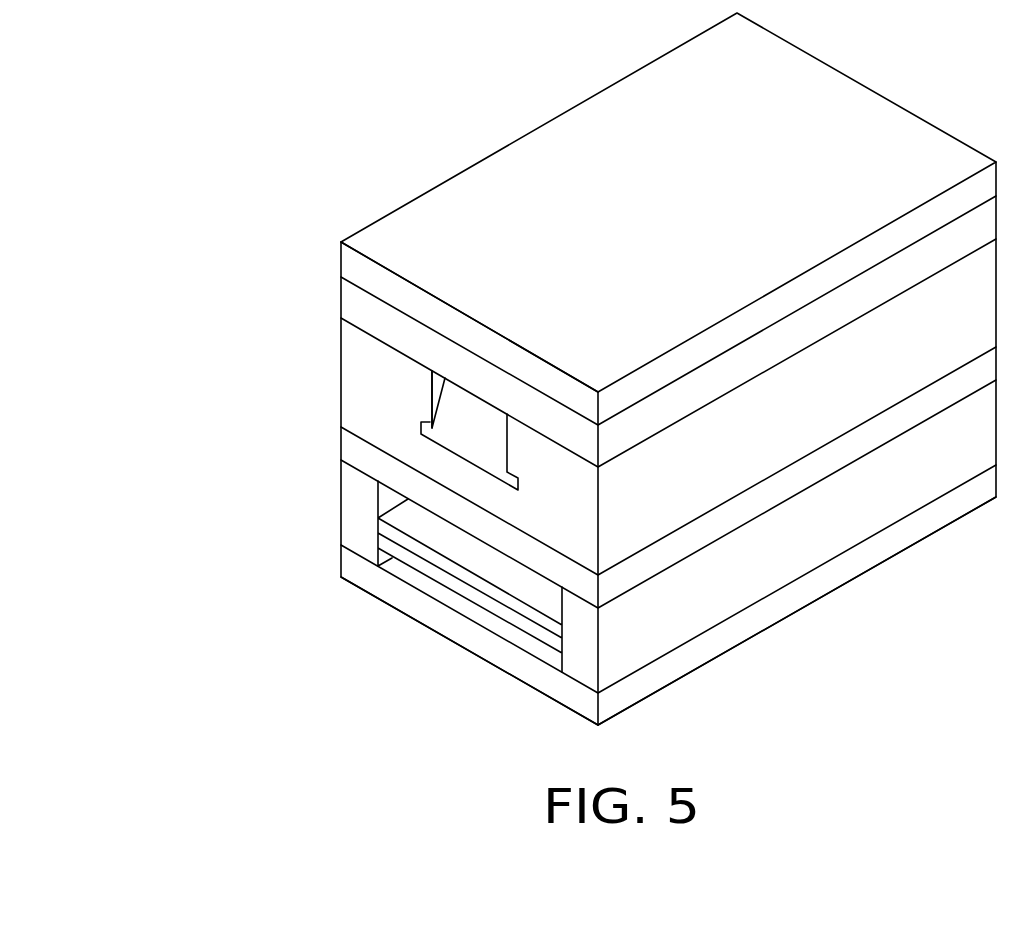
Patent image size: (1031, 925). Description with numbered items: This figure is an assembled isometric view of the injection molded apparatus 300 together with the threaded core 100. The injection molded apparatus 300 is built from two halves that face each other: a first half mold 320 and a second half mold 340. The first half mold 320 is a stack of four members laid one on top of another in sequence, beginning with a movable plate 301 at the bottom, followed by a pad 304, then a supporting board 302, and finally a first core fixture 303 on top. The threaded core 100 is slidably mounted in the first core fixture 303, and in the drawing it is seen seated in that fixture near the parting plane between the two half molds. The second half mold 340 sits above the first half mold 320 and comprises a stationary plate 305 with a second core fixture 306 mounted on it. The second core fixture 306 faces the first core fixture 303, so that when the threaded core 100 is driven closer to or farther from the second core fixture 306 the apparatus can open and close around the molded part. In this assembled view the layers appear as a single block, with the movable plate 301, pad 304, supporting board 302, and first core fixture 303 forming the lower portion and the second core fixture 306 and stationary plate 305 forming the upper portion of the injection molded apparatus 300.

The injection molded apparatus 300 is at (569, 369).
The second half mold 340 is at (578, 331).
The stationary plate 305 is at (357, 267).
The second core fixture 306 is at (360, 317).
The first half mold 320 is at (569, 535).
The threaded core 100 is at (467, 420).
The first core fixture 303 is at (613, 461).
The supporting board 302 is at (362, 456).
The pad 304 is at (362, 530).
The movable plate 301 is at (614, 611).